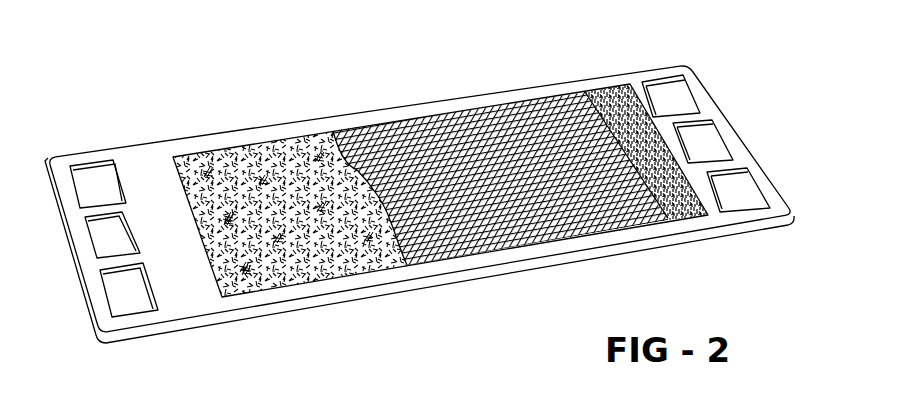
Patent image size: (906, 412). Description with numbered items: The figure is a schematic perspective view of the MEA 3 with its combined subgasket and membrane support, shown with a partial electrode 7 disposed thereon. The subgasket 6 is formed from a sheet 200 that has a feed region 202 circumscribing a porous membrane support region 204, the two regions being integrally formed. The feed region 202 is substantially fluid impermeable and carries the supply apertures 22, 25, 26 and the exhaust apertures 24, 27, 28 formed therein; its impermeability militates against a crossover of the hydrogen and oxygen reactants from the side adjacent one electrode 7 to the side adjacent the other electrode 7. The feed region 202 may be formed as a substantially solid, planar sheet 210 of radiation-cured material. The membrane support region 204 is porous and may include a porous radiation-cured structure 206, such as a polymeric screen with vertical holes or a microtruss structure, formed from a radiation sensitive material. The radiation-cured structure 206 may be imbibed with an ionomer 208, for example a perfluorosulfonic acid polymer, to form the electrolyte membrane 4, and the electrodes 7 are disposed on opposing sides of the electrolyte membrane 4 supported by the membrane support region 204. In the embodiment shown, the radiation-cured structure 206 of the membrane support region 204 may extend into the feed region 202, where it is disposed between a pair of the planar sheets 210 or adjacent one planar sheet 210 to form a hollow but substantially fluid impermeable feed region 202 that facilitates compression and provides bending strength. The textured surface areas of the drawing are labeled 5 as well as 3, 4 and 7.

The MEA 3 is at (768, 284).
The electrolyte membrane 4 is at (690, 177).
The second surface region 5 is at (500, 203).
The subgasket 6 is at (648, 100).
The electrode 7 is at (303, 253).
The supply aperture 22 is at (108, 176).
The exhaust aperture 24 is at (748, 170).
The supply aperture 25 is at (718, 122).
The supply aperture 26 is at (687, 72).
The exhaust aperture 27 is at (133, 225).
The exhaust aperture 28 is at (125, 310).
The sheet 200 is at (240, 128).
The feed region 202 is at (160, 235).
The membrane support region 204 is at (550, 213).
The radiation-cured structure 206 is at (473, 223).
The ionomer 208 is at (523, 127).
The planar sheet 210 is at (192, 282).